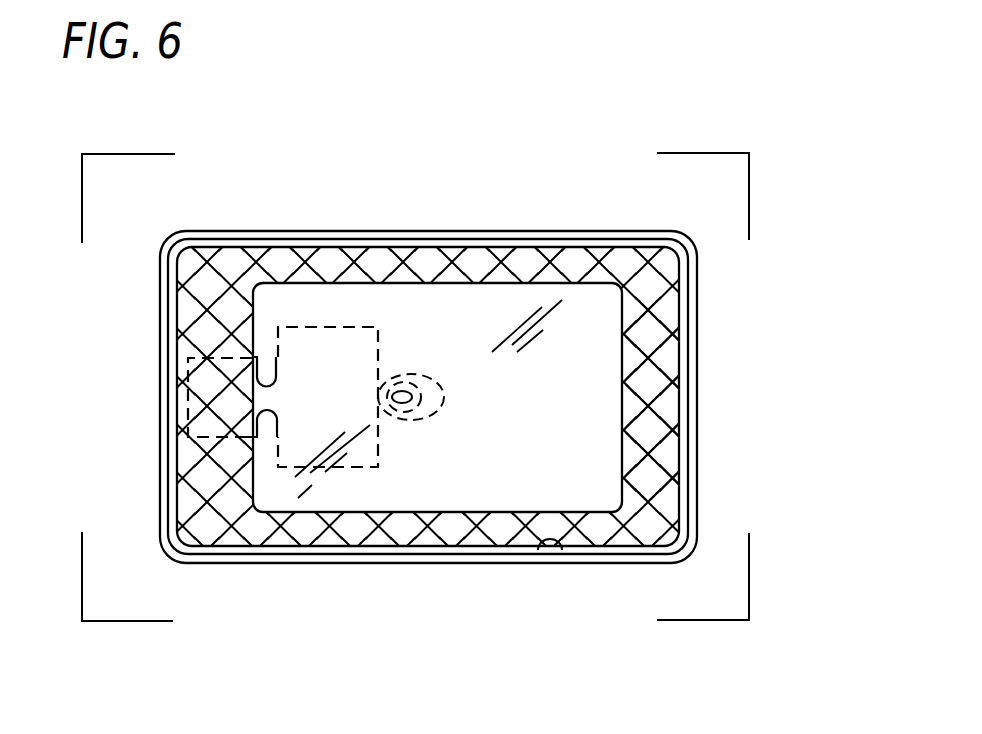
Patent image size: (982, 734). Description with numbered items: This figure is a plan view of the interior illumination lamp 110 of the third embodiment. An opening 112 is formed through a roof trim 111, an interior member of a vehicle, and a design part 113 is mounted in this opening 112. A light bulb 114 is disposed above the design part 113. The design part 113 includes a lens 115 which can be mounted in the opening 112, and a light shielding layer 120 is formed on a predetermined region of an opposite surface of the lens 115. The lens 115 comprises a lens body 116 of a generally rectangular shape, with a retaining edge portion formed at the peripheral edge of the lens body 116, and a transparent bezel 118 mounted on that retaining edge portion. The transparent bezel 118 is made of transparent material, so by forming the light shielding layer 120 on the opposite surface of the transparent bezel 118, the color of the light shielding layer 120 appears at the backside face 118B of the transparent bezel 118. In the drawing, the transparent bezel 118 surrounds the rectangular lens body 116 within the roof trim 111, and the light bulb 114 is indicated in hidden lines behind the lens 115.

The interior illumination lamp 110 is at (501, 367).
The roof trim 111 is at (702, 190).
The opening 112 is at (563, 548).
The design part 113 is at (488, 214).
The light bulb 114 is at (420, 376).
The lens 115 is at (585, 240).
The lens body 116 is at (468, 490).
The transparent bezel 118 is at (327, 247).
The backside face 118B is at (667, 448).
The light shielding layer 120 is at (677, 332).